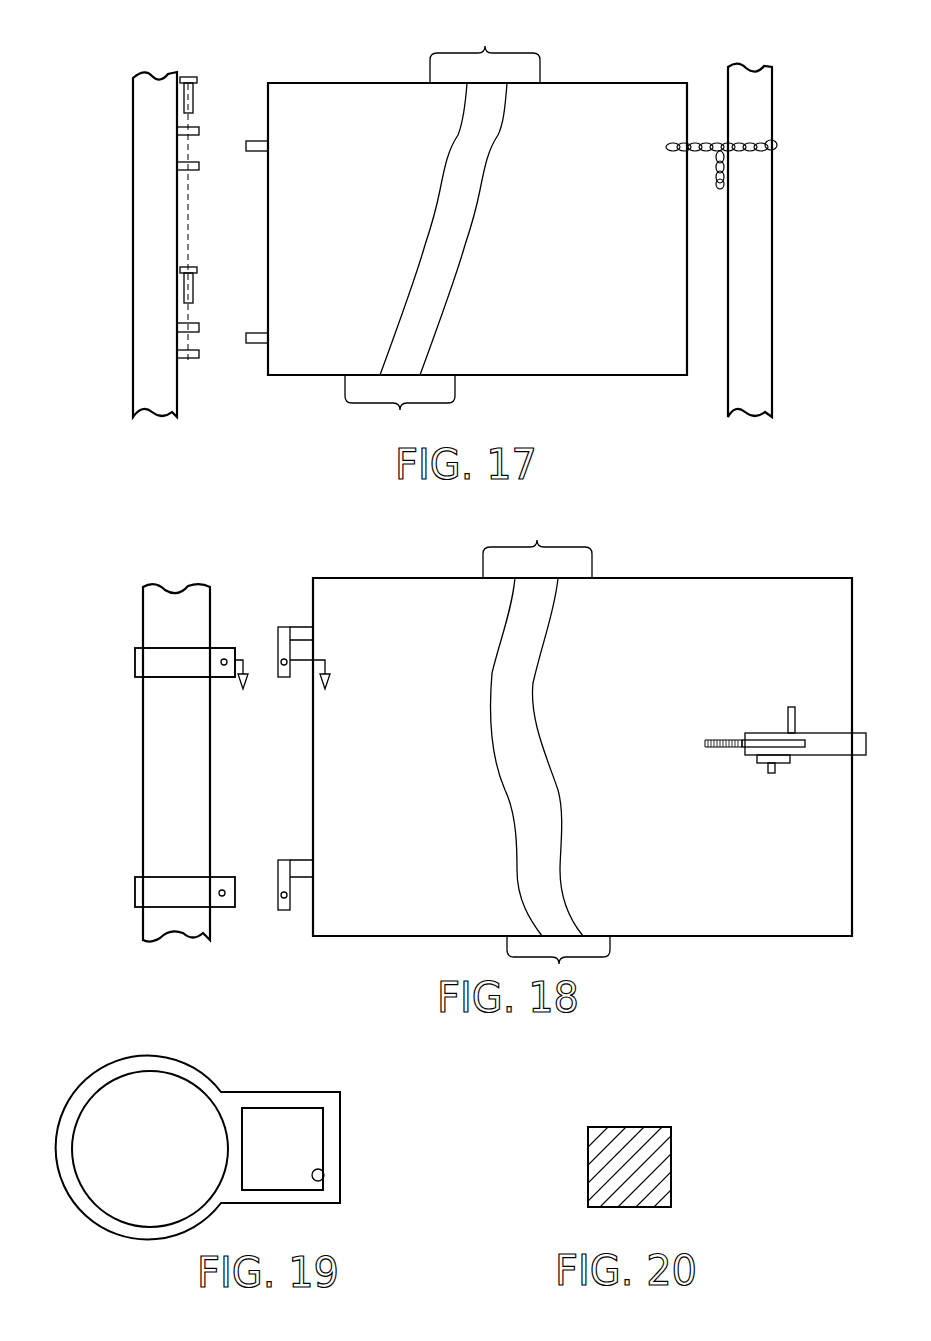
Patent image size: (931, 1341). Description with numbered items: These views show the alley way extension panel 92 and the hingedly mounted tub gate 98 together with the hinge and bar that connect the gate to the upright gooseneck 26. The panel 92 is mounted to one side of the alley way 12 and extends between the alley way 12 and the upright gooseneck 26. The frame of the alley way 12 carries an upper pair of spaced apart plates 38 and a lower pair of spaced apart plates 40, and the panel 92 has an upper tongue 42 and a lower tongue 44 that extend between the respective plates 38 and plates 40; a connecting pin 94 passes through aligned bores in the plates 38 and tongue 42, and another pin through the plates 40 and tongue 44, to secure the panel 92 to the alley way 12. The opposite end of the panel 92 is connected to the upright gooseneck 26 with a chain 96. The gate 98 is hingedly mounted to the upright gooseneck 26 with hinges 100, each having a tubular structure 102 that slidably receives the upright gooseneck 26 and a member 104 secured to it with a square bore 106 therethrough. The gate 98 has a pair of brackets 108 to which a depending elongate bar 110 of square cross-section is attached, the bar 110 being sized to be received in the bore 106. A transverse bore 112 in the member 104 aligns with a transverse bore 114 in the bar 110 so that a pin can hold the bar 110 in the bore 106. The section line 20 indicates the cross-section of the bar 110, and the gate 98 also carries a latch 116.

In FIG. 17, the alley way 12 is at (150, 234).
In FIG. 17, the connecting pin 94 is at (188, 77).
In FIG. 17, the upper pair of spaced apart plates 38 is at (199, 130).
In FIG. 17, the upper tongue 42 is at (255, 153).
In FIG. 17, the lower pair of spaced apart plates 40 is at (199, 328).
In FIG. 17, the lower tongue 44 is at (252, 345).
In FIG. 17, the alley way extension panel 92 is at (590, 100).
In FIG. 17, the upright gooseneck 26 is at (752, 216).
In FIG. 18, the upright gooseneck 26 is at (165, 808).
In FIG. 17, the chain 96 is at (775, 145).
In FIG. 18, the gate 98 is at (678, 592).
In FIG. 18, the hinge 100 is at (160, 664).
In FIG. 19, the hinge 100 is at (106, 1238).
In FIG. 18, the tubular structure 102 is at (178, 668).
In FIG. 19, the tubular structure 102 is at (192, 1068).
In FIG. 18, the member 104 is at (225, 652).
In FIG. 19, the member 104 is at (333, 1125).
In FIG. 19, the square bore 106 is at (320, 1183).
In FIG. 18, the brackets 108 is at (290, 860).
In FIG. 18, the elongate bar 110 is at (285, 683).
In FIG. 20, the elongate bar 110 is at (665, 1160).
In FIG. 18, the transverse bore 112 is at (222, 897).
In FIG. 18, the transverse bore 114 is at (288, 660).
In FIG. 18, the latch 116 is at (797, 757).
In FIG. 18, the section line for FIG. 20 is at (284, 690).